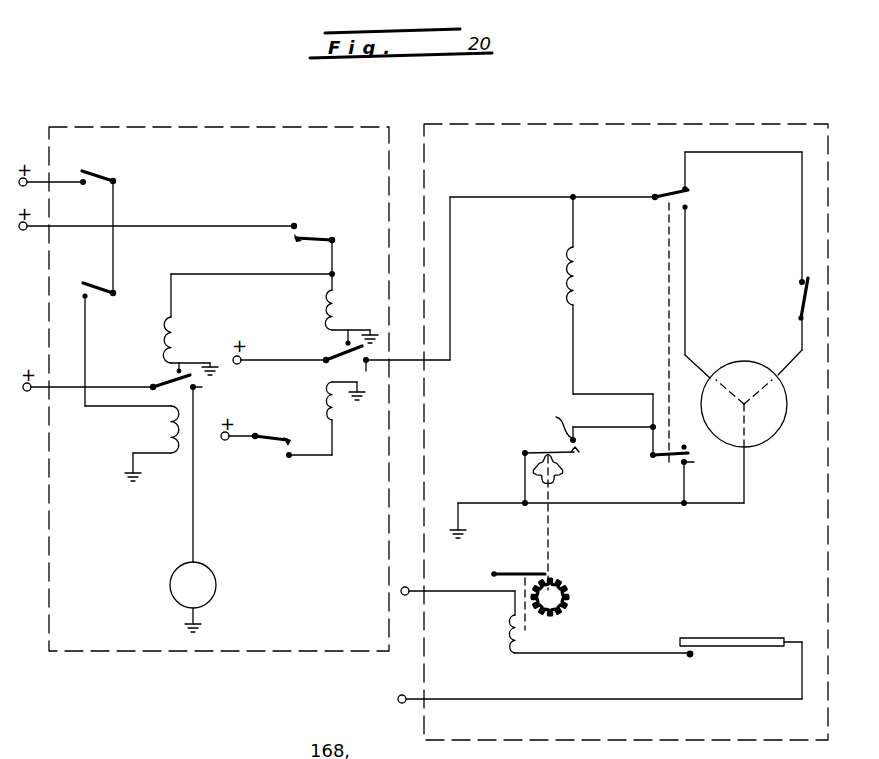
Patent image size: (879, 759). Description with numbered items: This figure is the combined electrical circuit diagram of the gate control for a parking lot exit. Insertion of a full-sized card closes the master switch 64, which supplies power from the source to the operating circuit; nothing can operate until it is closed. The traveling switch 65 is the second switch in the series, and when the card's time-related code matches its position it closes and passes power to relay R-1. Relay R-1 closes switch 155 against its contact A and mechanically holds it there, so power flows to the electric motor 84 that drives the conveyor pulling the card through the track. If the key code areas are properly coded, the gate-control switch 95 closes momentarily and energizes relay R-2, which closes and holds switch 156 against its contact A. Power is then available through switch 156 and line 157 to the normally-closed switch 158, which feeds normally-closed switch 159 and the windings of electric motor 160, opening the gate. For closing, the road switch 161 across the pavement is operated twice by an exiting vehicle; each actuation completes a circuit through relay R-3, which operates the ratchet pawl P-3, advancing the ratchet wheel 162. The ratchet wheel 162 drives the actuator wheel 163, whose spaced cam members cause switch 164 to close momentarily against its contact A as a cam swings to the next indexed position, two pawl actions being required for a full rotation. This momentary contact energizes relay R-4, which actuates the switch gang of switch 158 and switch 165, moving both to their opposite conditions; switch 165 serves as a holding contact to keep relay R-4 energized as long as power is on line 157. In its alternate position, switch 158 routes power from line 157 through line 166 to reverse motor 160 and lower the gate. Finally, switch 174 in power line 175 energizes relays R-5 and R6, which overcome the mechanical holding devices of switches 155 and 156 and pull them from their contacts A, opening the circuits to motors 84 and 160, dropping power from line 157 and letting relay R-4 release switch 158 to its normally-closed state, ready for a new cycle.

The master switch 64 is at (104, 174).
The traveling switch 65 is at (97, 272).
The power line 175 is at (182, 226).
The switch 174 is at (319, 232).
The relay R-6 R6 is at (160, 324).
The relay R-5 is at (326, 313).
The relay R-1 is at (168, 430).
The relay R-2 is at (325, 401).
The switch 155 is at (163, 381).
The switch 156 is at (340, 361).
The gate-control switch 95 is at (278, 427).
The electric motor 84 is at (216, 585).
The line 157 is at (452, 302).
The switch 158 is at (661, 196).
The relay R-4 is at (578, 290).
The switch 164 is at (636, 380).
The actuator wheel 163 is at (560, 467).
The switch 165 is at (666, 457).
The line 166 is at (687, 282).
The switch 159 is at (799, 310).
The electric motor 160 is at (764, 432).
The relay R-3 is at (508, 640).
The ratchet pawl P-3 is at (537, 570).
The ratchet wheel 162 is at (540, 596).
The road switch 161 is at (722, 636).